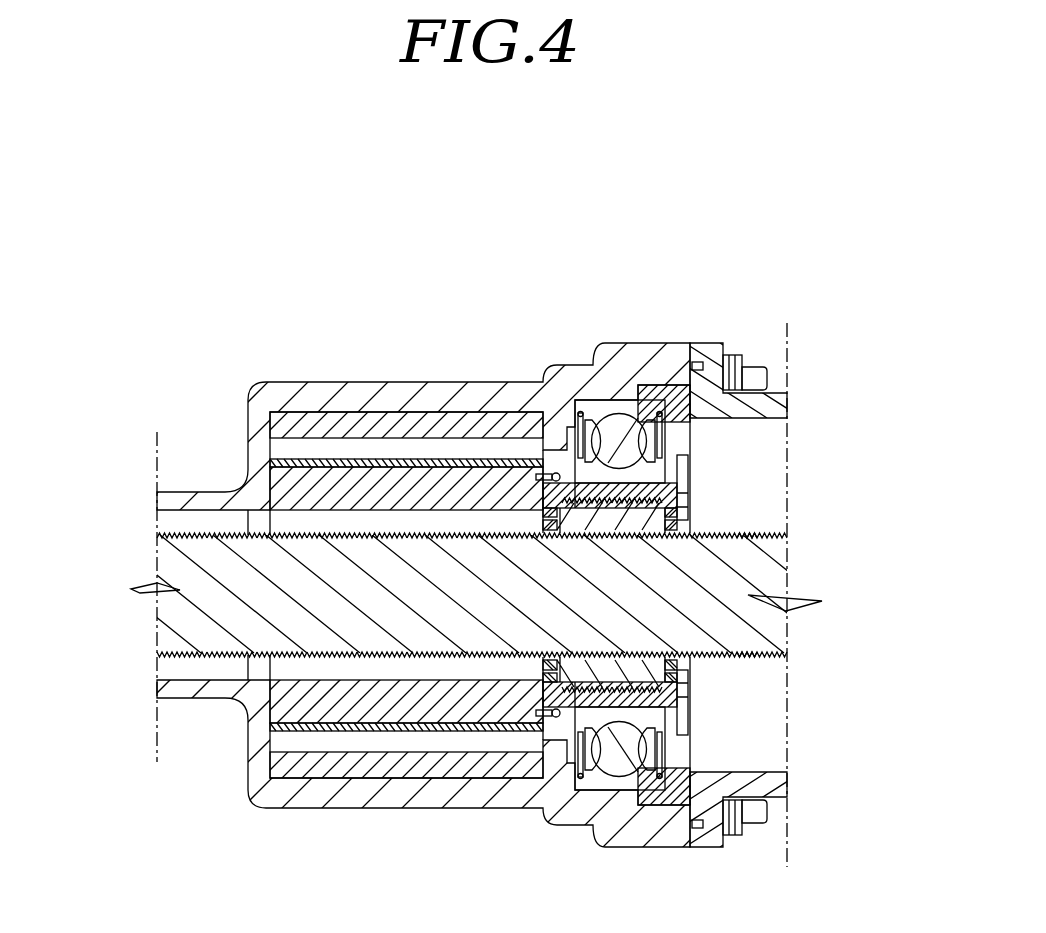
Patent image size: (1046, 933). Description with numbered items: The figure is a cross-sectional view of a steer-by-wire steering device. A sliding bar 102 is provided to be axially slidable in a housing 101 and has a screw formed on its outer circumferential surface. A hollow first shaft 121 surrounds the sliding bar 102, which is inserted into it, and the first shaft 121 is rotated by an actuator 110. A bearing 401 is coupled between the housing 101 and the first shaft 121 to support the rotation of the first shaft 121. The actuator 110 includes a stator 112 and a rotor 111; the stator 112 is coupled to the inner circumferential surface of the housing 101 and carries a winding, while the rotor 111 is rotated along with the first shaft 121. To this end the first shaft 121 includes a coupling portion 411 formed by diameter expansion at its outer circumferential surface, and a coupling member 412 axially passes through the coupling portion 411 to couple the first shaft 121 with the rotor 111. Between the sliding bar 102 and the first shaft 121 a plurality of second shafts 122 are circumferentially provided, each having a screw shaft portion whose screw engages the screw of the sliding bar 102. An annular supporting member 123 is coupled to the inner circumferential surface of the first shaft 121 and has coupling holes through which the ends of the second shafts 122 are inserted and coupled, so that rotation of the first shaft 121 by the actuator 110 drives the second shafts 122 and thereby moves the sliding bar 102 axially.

The housing 101 is at (262, 433).
The sliding bar 102 is at (173, 630).
The actuator 110 is at (455, 512).
The rotor 111 is at (397, 417).
The stator 112 is at (323, 477).
The first shaft 121 is at (668, 487).
The second shaft 122 is at (630, 520).
The supporting member 123 is at (683, 523).
The bearing 401 is at (618, 440).
The coupling portion 411 is at (553, 715).
The coupling member 412 is at (541, 712).